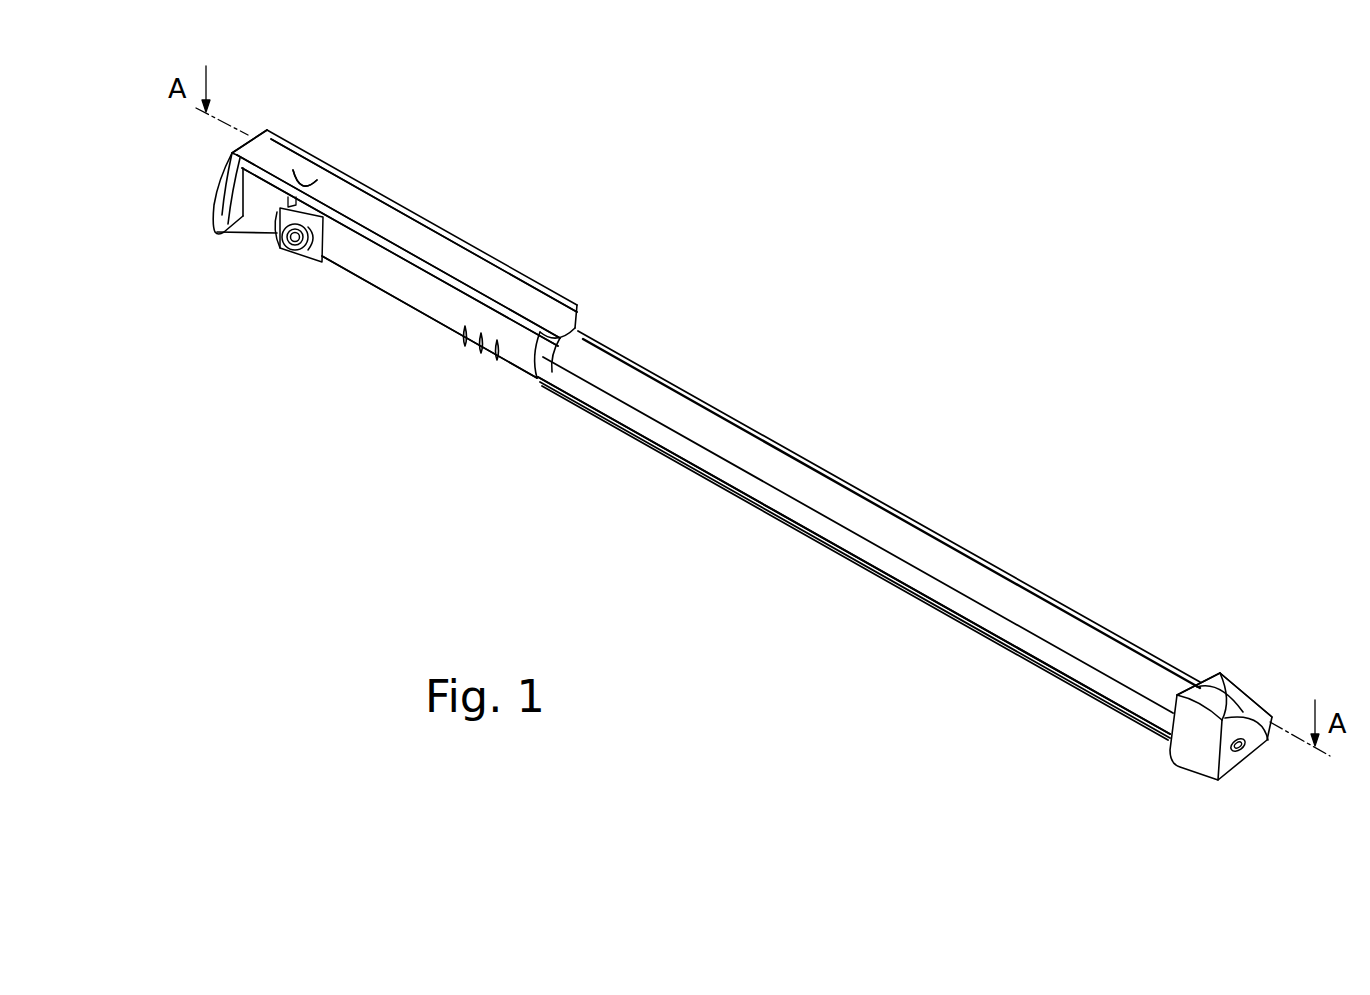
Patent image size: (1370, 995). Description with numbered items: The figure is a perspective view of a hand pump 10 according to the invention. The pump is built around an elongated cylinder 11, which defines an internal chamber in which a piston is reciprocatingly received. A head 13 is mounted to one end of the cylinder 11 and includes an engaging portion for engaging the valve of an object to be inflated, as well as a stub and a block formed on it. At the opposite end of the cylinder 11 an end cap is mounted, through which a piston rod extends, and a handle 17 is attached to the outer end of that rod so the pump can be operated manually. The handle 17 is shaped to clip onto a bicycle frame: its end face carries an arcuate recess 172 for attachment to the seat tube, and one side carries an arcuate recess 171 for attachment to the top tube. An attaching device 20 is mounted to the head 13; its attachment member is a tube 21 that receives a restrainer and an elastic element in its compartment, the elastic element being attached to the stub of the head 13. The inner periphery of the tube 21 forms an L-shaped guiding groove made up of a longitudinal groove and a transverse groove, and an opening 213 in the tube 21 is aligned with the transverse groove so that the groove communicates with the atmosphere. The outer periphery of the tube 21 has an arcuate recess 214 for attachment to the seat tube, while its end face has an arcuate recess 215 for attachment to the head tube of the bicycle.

The hand pump 10 is at (842, 476).
The cylinder 11 is at (842, 550).
The head 13 is at (297, 255).
The handle 17 is at (1185, 752).
The arcuate recess 171 is at (1218, 670).
The arcuate recess 172 is at (1244, 757).
The attaching device 20 is at (453, 222).
The tube 21 is at (405, 298).
The opening 213 is at (293, 197).
The arcuate recess 214 is at (508, 286).
The arcuate recess 215 is at (220, 183).